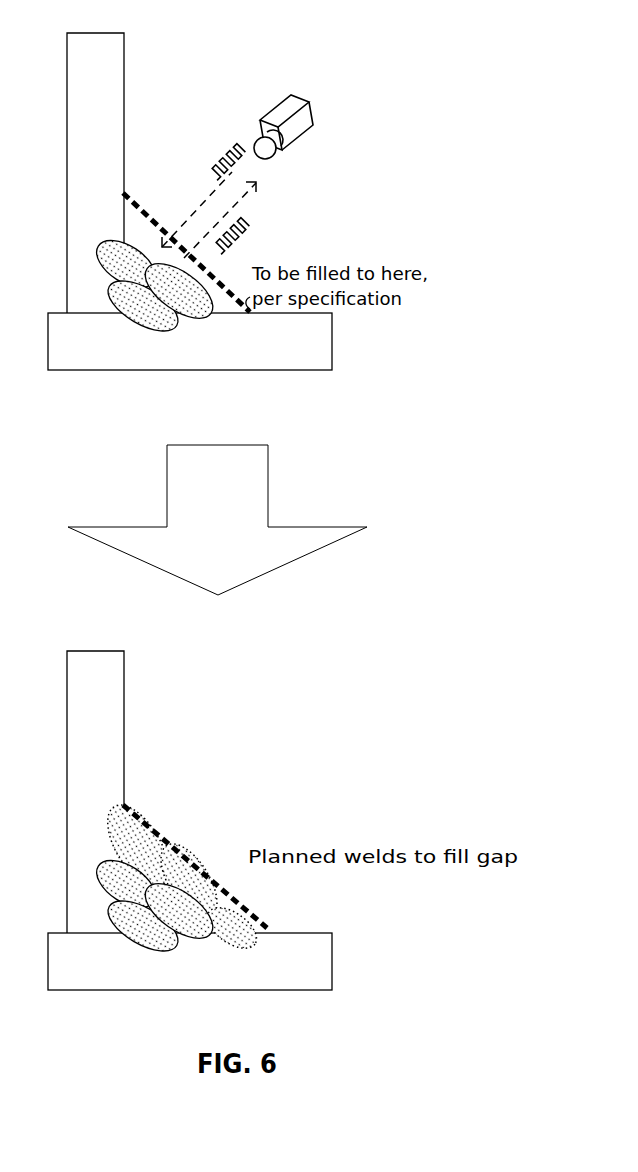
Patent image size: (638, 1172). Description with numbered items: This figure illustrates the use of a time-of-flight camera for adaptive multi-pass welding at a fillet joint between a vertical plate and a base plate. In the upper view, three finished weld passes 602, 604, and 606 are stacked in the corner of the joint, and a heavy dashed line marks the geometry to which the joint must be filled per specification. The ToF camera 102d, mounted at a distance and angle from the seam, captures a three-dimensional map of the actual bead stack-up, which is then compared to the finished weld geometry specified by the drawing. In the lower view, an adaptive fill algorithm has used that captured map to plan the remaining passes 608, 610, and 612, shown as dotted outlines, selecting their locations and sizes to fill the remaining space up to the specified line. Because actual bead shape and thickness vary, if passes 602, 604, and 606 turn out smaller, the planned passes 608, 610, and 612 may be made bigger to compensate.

The ToF camera 102d is at (309, 100).
The pass 602 is at (124, 310).
The pass 604 is at (107, 269).
The pass 606 is at (163, 298).
The remaining pass 608 is at (245, 926).
The remaining pass 610 is at (168, 890).
The remaining pass 612 is at (123, 858).